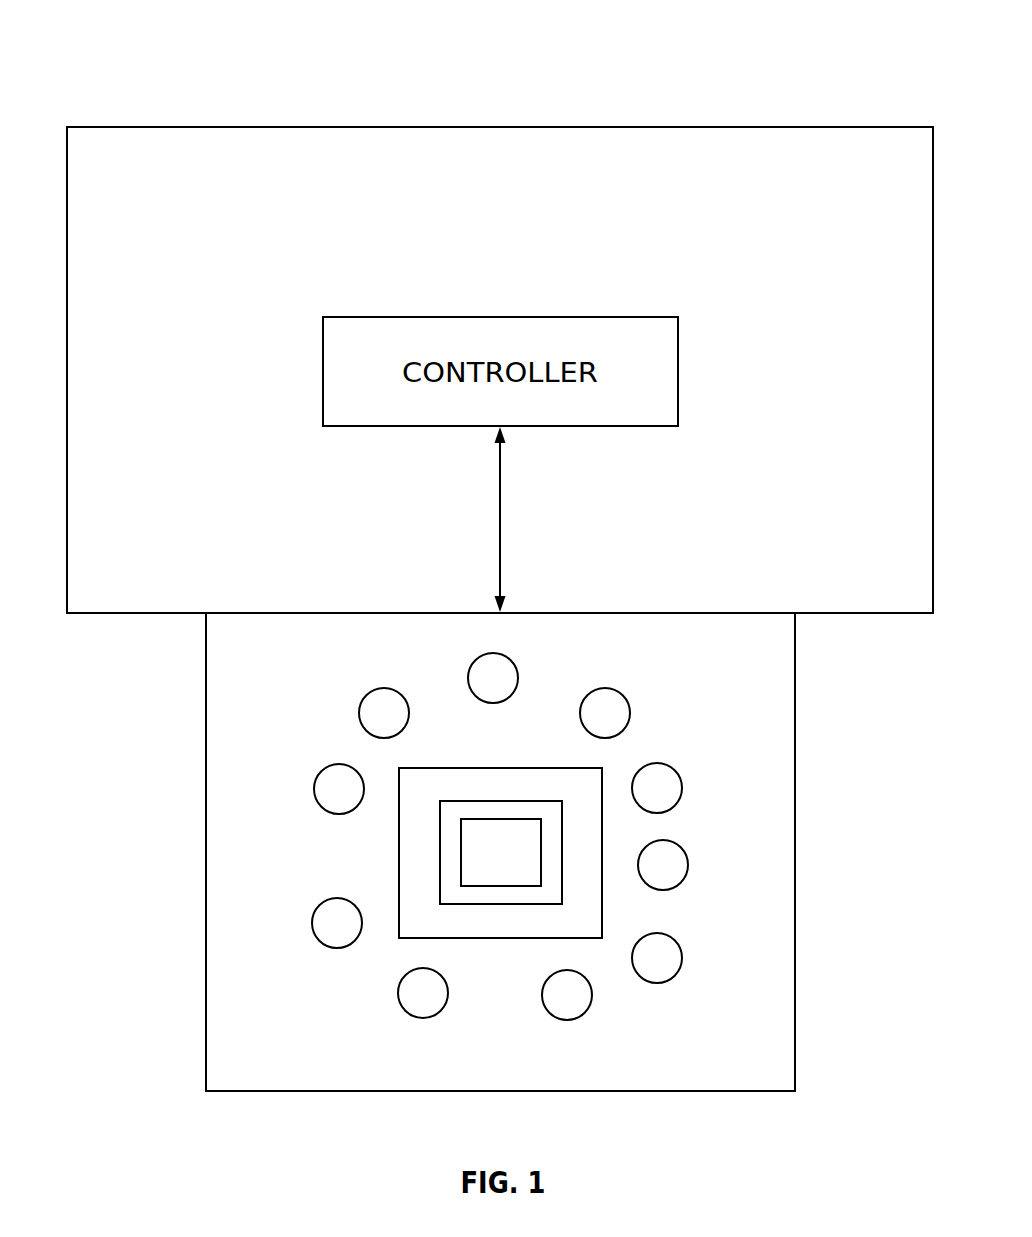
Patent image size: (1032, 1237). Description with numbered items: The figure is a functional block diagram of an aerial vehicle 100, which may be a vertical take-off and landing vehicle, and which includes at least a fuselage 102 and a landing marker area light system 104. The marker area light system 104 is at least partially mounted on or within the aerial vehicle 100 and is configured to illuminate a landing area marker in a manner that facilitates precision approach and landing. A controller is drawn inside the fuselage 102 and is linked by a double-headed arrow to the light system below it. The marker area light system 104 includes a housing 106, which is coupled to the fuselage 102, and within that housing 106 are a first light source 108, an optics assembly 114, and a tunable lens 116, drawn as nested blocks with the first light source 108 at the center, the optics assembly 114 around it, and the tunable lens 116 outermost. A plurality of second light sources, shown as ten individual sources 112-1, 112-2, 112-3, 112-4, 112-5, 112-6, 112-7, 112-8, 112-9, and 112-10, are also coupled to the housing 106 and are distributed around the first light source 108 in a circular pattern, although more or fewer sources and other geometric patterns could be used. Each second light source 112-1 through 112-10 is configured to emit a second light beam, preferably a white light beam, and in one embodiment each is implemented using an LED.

The aerial vehicle 100 is at (117, 49).
The fuselage 102 is at (143, 127).
The landing marker area light system 104 is at (154, 681).
The housing 106 is at (795, 853).
The first light source 108 is at (476, 865).
The optics assembly 114 is at (500, 801).
The tunable lens 116 is at (500, 768).
The second light source 112-1 is at (505, 656).
The second light source 112-2 is at (605, 688).
The second light source 112-3 is at (657, 763).
The second light source 112-4 is at (659, 889).
The second light source 112-5 is at (653, 982).
The second light source 112-6 is at (567, 1020).
The second light source 112-7 is at (423, 1018).
The second light source 112-8 is at (328, 899).
The second light source 112-9 is at (330, 765).
The second light source 112-10 is at (371, 691).